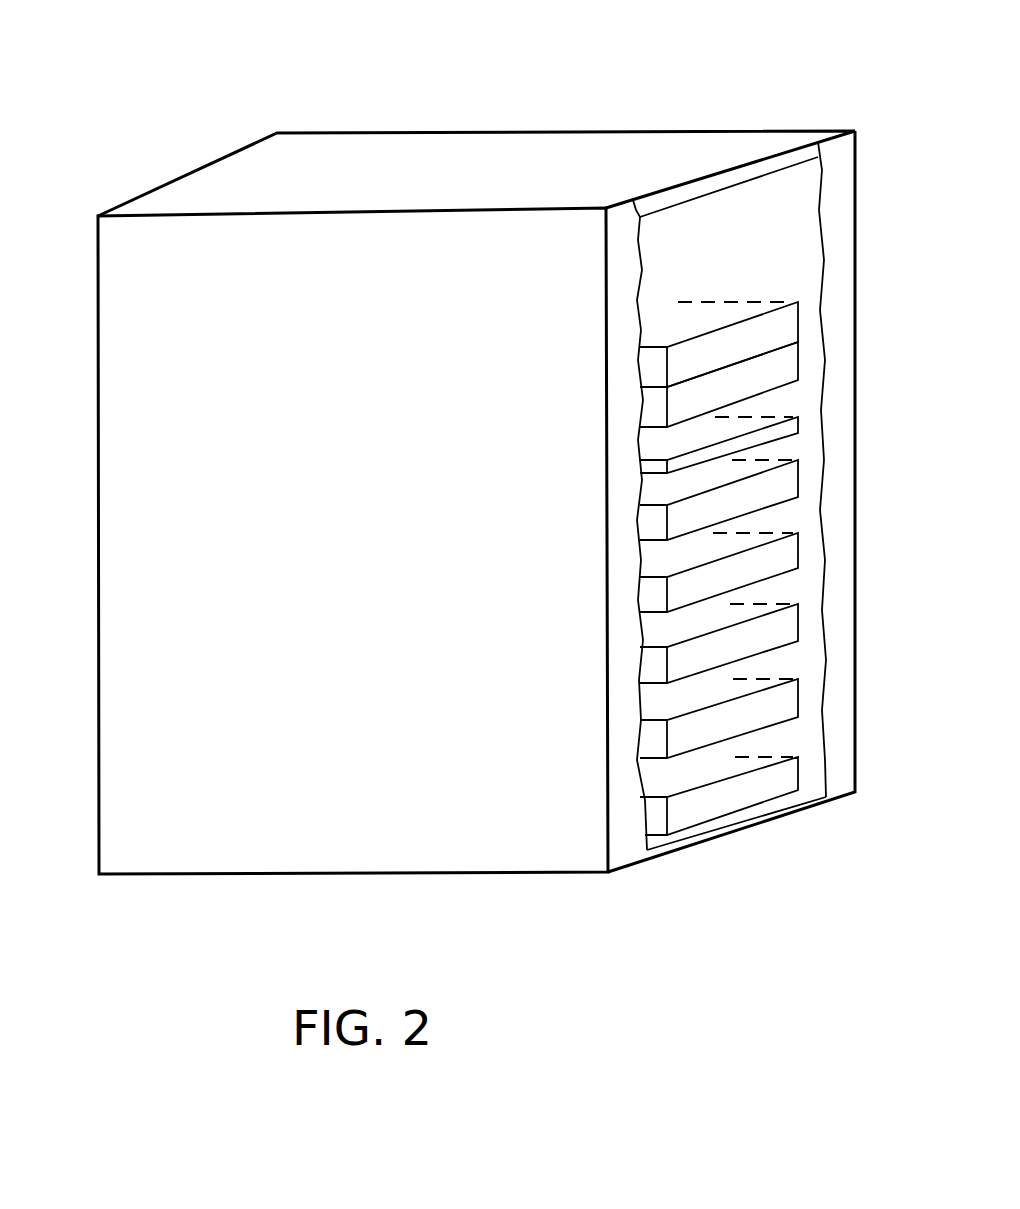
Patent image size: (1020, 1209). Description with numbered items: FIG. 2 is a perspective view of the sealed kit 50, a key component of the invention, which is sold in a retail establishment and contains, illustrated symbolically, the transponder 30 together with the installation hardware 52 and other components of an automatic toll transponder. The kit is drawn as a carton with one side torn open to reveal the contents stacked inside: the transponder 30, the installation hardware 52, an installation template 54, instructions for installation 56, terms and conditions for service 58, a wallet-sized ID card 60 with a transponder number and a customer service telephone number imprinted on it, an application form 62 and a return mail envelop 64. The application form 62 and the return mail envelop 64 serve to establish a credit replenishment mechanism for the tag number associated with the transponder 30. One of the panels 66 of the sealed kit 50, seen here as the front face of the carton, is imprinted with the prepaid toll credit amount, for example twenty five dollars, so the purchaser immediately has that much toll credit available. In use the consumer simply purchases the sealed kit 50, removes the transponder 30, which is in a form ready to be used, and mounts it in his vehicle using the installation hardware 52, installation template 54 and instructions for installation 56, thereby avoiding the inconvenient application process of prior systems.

The sealed kit 50 is at (362, 108).
The panel 66 is at (125, 415).
The return mail envelop 64 is at (798, 313).
The application form 62 is at (798, 360).
The wallet-sized ID card 60 is at (798, 419).
The terms and conditions for service 58 is at (798, 468).
The instructions for installation 56 is at (799, 547).
The installation template 54 is at (799, 620).
The installation hardware 52 is at (799, 693).
The transponder 30 is at (801, 775).